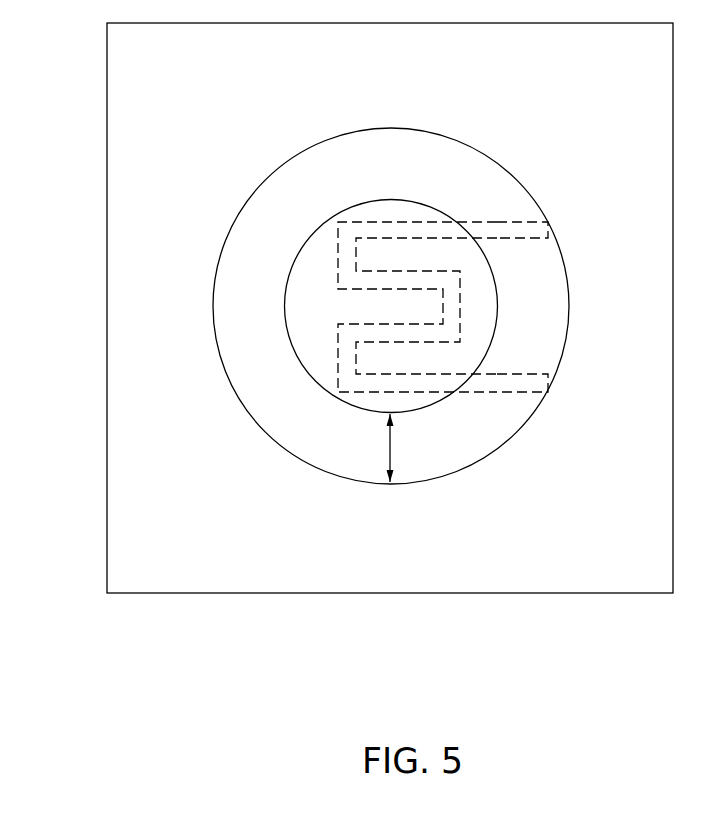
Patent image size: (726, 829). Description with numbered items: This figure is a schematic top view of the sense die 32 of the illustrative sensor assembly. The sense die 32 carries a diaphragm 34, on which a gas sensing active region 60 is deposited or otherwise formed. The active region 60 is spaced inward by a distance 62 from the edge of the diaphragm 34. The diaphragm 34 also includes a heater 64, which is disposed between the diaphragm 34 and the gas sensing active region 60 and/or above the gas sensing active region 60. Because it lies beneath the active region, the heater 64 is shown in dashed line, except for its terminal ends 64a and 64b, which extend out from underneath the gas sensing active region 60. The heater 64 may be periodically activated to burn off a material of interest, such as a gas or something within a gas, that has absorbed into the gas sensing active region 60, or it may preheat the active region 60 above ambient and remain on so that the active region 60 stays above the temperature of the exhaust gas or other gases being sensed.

The sense die 32 is at (143, 537).
The diaphragm 34 is at (374, 262).
The gas sensing active region 60 is at (310, 304).
The distance 62 is at (392, 448).
The heater 64 is at (467, 200).
The terminal end 64a is at (512, 228).
The terminal end 64b is at (508, 382).